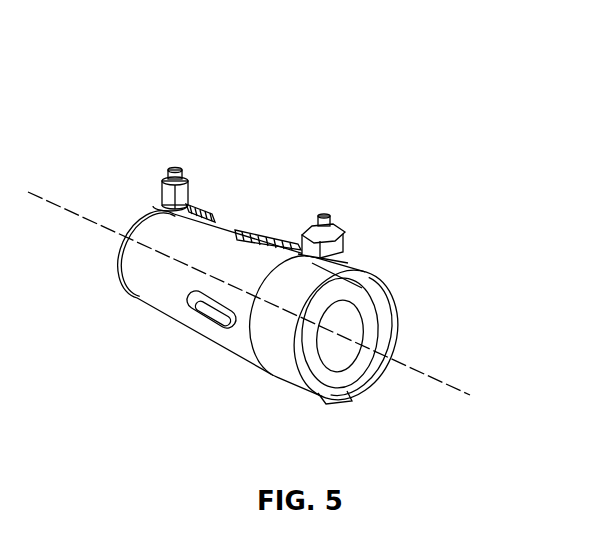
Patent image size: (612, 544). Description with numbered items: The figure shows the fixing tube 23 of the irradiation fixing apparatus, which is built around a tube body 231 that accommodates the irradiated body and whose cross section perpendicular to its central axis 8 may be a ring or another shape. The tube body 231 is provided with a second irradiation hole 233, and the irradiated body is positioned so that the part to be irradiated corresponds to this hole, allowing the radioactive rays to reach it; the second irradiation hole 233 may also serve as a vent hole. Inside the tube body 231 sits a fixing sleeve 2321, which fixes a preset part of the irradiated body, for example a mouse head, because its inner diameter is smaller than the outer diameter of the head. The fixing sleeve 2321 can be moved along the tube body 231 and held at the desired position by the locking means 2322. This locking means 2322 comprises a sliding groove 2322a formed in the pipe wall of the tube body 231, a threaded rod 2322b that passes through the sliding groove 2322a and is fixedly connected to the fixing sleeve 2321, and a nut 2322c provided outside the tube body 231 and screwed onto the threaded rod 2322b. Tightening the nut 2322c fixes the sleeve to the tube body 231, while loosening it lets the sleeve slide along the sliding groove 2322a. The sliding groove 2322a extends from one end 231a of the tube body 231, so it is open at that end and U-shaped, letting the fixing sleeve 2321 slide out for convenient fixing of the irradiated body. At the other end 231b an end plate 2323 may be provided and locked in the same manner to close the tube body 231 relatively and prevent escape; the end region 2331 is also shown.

The fixing tube 23 is at (298, 251).
The central axis 8 is at (452, 386).
The tube body 231 is at (205, 327).
The one end of the tube body 231a is at (378, 377).
The other end of the tube body 231b is at (156, 200).
The fixing sleeve 2321 is at (258, 222).
The locking means 2322 is at (400, 234).
The sliding groove 2322a is at (347, 263).
The threaded rod 2322b is at (339, 215).
The nut 2322c is at (335, 268).
The end plate 2323 is at (136, 236).
The second irradiation hole 233 is at (500, 244).
The ring end face 2331 is at (365, 318).